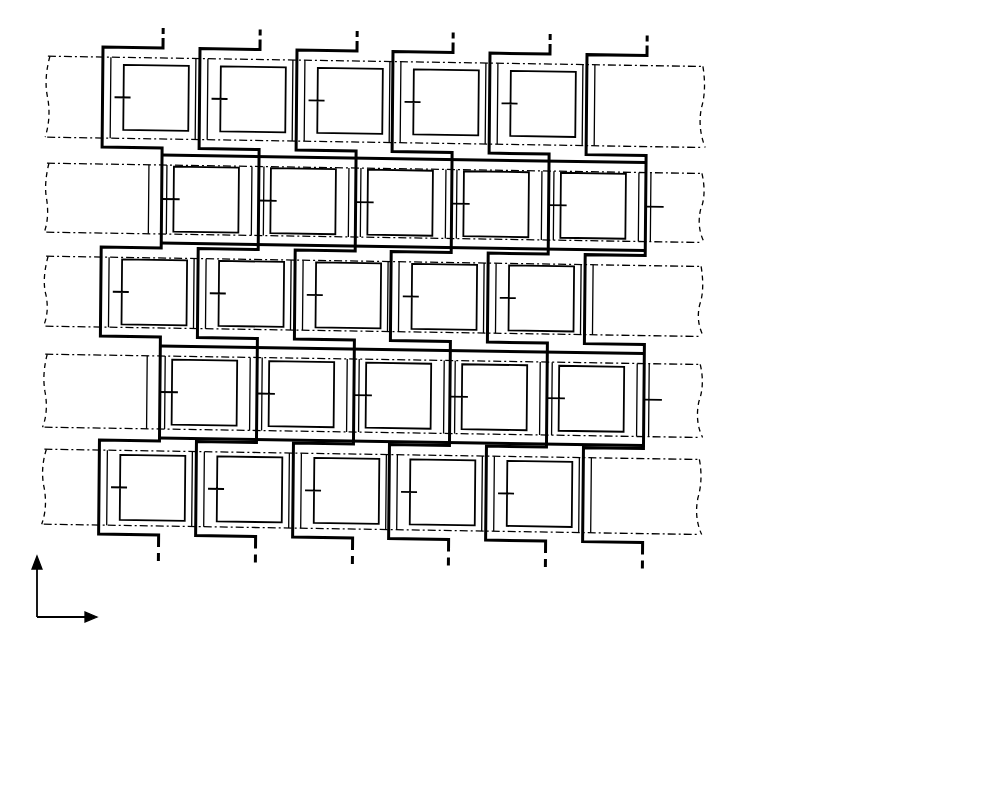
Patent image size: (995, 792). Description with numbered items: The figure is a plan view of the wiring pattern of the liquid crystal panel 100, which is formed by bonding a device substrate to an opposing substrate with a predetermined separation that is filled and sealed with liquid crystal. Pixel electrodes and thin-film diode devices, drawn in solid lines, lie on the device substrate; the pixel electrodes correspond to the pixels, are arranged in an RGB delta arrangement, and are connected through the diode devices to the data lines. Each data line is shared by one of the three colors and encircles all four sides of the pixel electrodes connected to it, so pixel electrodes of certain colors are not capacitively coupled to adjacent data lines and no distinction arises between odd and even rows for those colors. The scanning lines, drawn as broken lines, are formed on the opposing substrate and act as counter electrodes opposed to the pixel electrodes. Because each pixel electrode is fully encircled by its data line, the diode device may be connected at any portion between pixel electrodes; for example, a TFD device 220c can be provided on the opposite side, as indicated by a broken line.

The liquid crystal panel 100 is at (808, 47).
The TFD device 220c is at (463, 494).